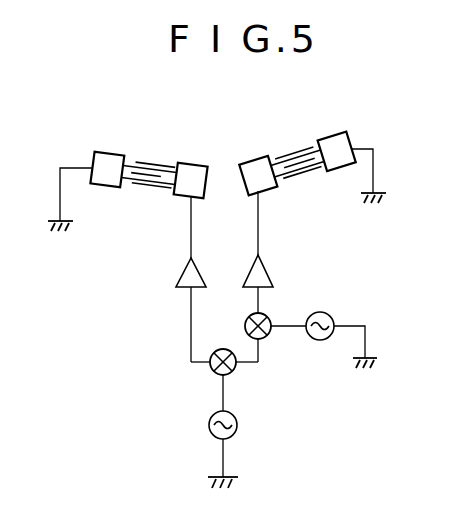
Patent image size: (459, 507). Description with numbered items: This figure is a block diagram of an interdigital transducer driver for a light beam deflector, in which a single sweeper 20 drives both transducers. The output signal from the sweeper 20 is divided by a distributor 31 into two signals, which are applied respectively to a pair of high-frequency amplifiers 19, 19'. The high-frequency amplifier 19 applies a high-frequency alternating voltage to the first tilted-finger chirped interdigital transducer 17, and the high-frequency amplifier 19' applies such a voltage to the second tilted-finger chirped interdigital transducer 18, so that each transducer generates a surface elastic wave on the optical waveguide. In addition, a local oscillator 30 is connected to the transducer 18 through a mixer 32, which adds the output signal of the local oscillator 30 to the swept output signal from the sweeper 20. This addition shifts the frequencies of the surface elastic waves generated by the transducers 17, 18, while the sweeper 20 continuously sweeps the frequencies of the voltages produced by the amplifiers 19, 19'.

The first tilted-finger chirped interdigital transducer 17 is at (153, 163).
The second tilted-finger chirped interdigital transducer 18 is at (290, 160).
The high-frequency amplifier 19 is at (169, 279).
The high-frequency amplifier 19' is at (282, 252).
The sweeper 20 is at (236, 428).
The local oscillator 30 is at (331, 313).
The distributor 31 is at (233, 377).
The mixer 32 is at (268, 337).